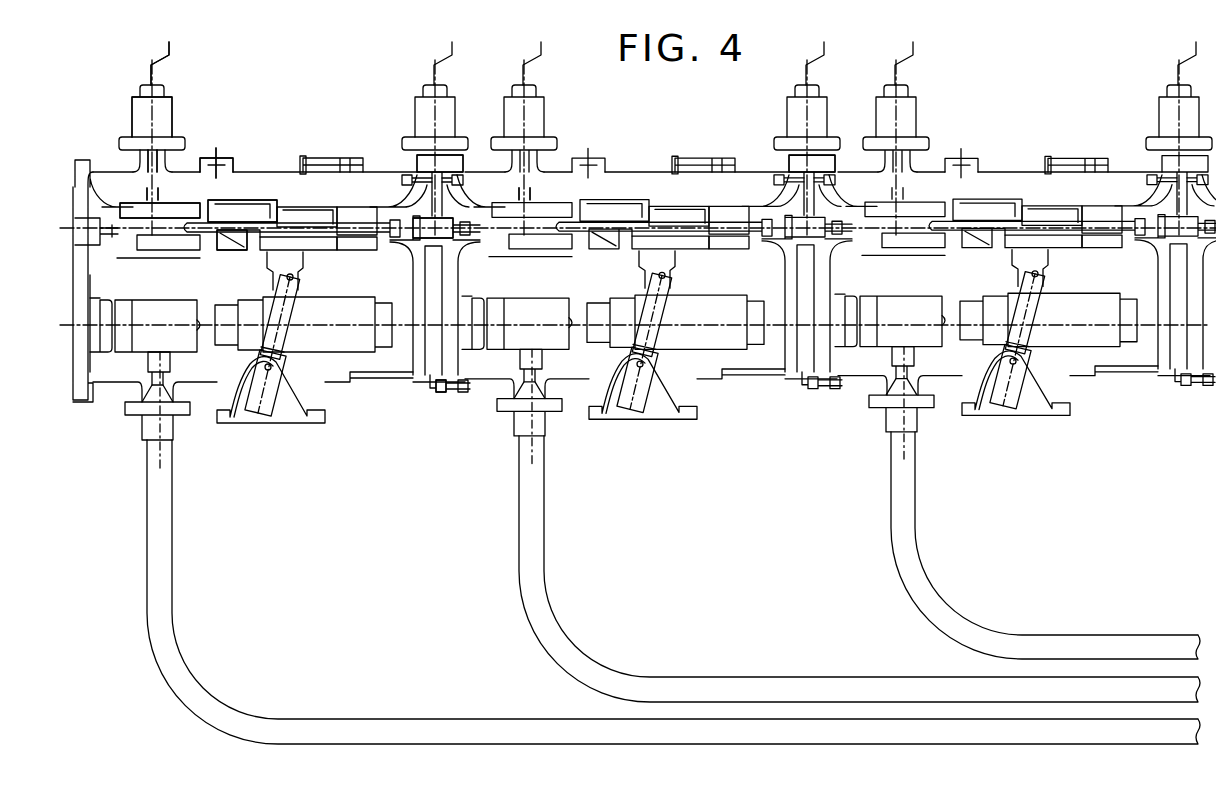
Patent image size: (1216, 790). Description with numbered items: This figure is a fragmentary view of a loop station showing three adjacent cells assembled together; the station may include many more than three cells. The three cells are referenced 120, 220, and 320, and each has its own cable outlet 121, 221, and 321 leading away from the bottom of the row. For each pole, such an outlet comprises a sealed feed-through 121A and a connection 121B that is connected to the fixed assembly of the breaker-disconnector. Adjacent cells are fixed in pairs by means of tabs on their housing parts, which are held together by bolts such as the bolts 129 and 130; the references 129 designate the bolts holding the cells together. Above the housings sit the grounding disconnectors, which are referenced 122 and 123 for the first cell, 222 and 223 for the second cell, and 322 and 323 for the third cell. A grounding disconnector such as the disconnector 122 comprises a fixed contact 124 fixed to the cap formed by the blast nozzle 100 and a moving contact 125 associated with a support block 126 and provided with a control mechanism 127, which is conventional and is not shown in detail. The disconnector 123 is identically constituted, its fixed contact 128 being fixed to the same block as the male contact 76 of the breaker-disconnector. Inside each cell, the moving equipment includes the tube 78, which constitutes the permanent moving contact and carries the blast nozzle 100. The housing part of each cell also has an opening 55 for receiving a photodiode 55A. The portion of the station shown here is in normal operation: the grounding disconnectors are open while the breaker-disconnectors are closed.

The cell 120 is at (278, 172).
The cell 220 is at (648, 172).
The cell 320 is at (1020, 172).
The cable outlet 121 is at (172, 532).
The cable outlet 221 is at (544, 524).
The cable outlet 321 is at (915, 523).
The sealed feed-through 121A is at (172, 428).
The connection 121B is at (170, 361).
The grounding disconnector 122 is at (132, 112).
The grounding disconnector 123 is at (418, 110).
The grounding disconnector 222 is at (535, 108).
The grounding disconnector 223 is at (817, 107).
The grounding disconnector 322 is at (906, 107).
The grounding disconnector 323 is at (1165, 111).
The fixed contact 124 is at (150, 190).
The moving contact 125 is at (147, 163).
The support block 126 is at (166, 107).
The control mechanism 127 is at (157, 64).
The fixed contact 128 is at (534, 196).
The bolt 129 is at (458, 158).
The bolt 130 is at (832, 158).
The opening 55 is at (215, 163).
The photodiode 55A is at (218, 167).
The male contact 76 is at (420, 240).
The tube 78 is at (240, 198).
The blast nozzle 100 is at (180, 222).